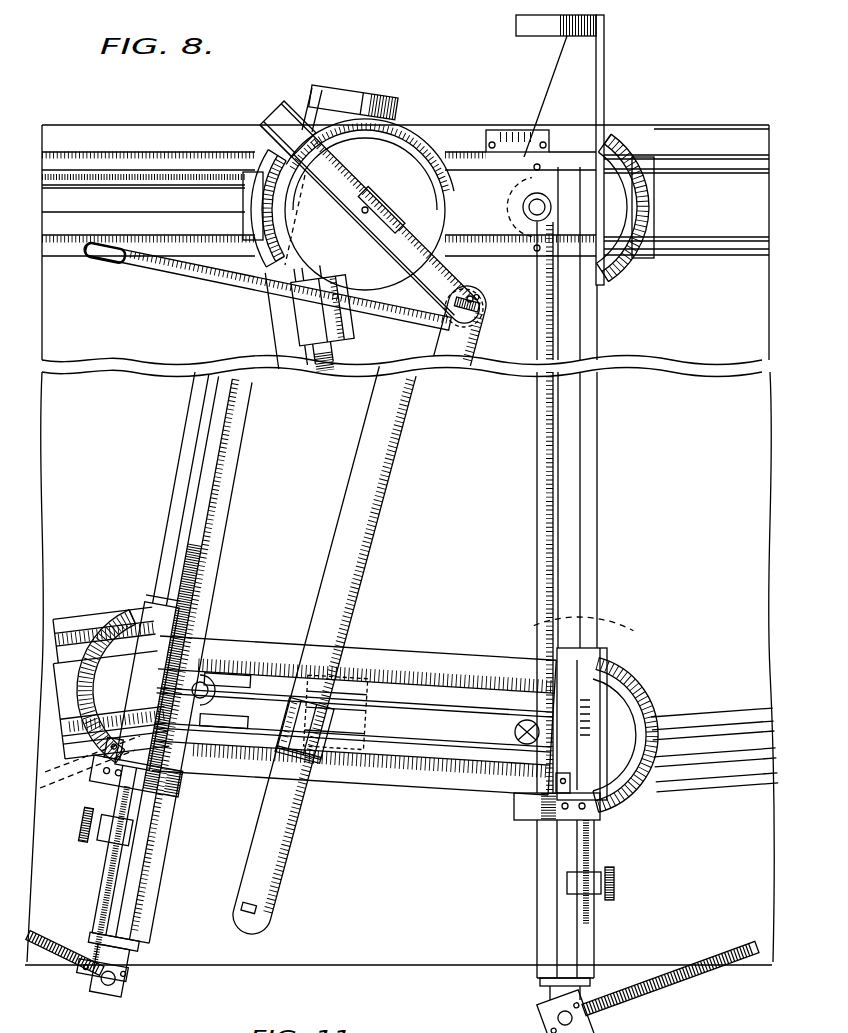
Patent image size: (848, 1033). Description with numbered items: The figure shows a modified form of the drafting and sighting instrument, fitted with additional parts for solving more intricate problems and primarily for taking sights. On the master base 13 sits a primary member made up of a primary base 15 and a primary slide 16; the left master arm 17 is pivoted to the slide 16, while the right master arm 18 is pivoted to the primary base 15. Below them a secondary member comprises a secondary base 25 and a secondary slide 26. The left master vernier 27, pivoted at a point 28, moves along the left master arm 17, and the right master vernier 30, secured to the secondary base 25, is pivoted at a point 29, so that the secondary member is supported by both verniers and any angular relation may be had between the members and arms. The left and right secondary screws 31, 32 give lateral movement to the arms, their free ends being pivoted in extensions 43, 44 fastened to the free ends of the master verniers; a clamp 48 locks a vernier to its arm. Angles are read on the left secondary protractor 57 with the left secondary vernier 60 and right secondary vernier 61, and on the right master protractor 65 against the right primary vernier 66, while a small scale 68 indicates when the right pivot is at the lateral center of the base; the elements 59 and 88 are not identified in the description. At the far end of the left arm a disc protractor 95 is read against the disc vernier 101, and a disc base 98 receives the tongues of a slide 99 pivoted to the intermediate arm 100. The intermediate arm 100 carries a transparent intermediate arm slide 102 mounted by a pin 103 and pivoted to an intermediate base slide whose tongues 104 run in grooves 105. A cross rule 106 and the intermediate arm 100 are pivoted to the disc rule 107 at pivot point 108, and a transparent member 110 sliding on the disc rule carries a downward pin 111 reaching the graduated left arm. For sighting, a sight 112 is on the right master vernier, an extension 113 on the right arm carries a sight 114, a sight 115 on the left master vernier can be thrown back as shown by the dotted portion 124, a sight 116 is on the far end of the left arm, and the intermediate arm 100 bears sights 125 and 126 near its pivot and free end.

The master base 13 is at (436, 966).
The primary base 15 is at (63, 257).
The primary slide 16 is at (686, 205).
The left master arm 17 is at (185, 438).
The right master arm 18 is at (586, 528).
The secondary base 25 is at (63, 614).
The secondary slide 26 is at (684, 722).
The left master vernier 27 is at (152, 600).
The pivot point 28 is at (212, 694).
The pivot point 29 is at (515, 730).
The right master vernier 30 is at (586, 660).
The left secondary screw 31 is at (60, 952).
The right secondary screw 32 is at (650, 985).
The extension 43 is at (140, 954).
The extension 44 is at (550, 1000).
The clamp 48 is at (600, 877).
The left secondary protractor 57 is at (118, 632).
The right protractor arc end 59 is at (635, 797).
The left secondary vernier 60 is at (133, 625).
The right secondary vernier 61 is at (640, 690).
The right master protractor 65 is at (548, 204).
The right primary vernier 66 is at (650, 203).
The small scale 68 is at (512, 135).
The rail top edge 88 is at (709, 131).
The disc protractor 95 is at (383, 140).
The disc base 98 is at (346, 160).
The slide 99 is at (270, 112).
The intermediate arm 100 is at (350, 496).
The disc vernier 101 is at (250, 200).
The intermediate arm slide 102 is at (297, 753).
The pin 103 is at (292, 715).
The tongues 104 is at (348, 730).
The grooves 105 is at (402, 734).
The cross rule 106 is at (170, 265).
The disc rule 107 is at (460, 276).
The pivot point 108 is at (480, 300).
The transparent member 110 is at (295, 322).
The pin 111 is at (350, 312).
The sight 112 is at (527, 805).
The extension 113 is at (604, 70).
The sight 114 is at (516, 26).
The sight 115 is at (202, 778).
The sight 116 is at (386, 98).
The dotted portion 124 is at (88, 765).
The sight 125 is at (480, 313).
The sight 126 is at (268, 925).